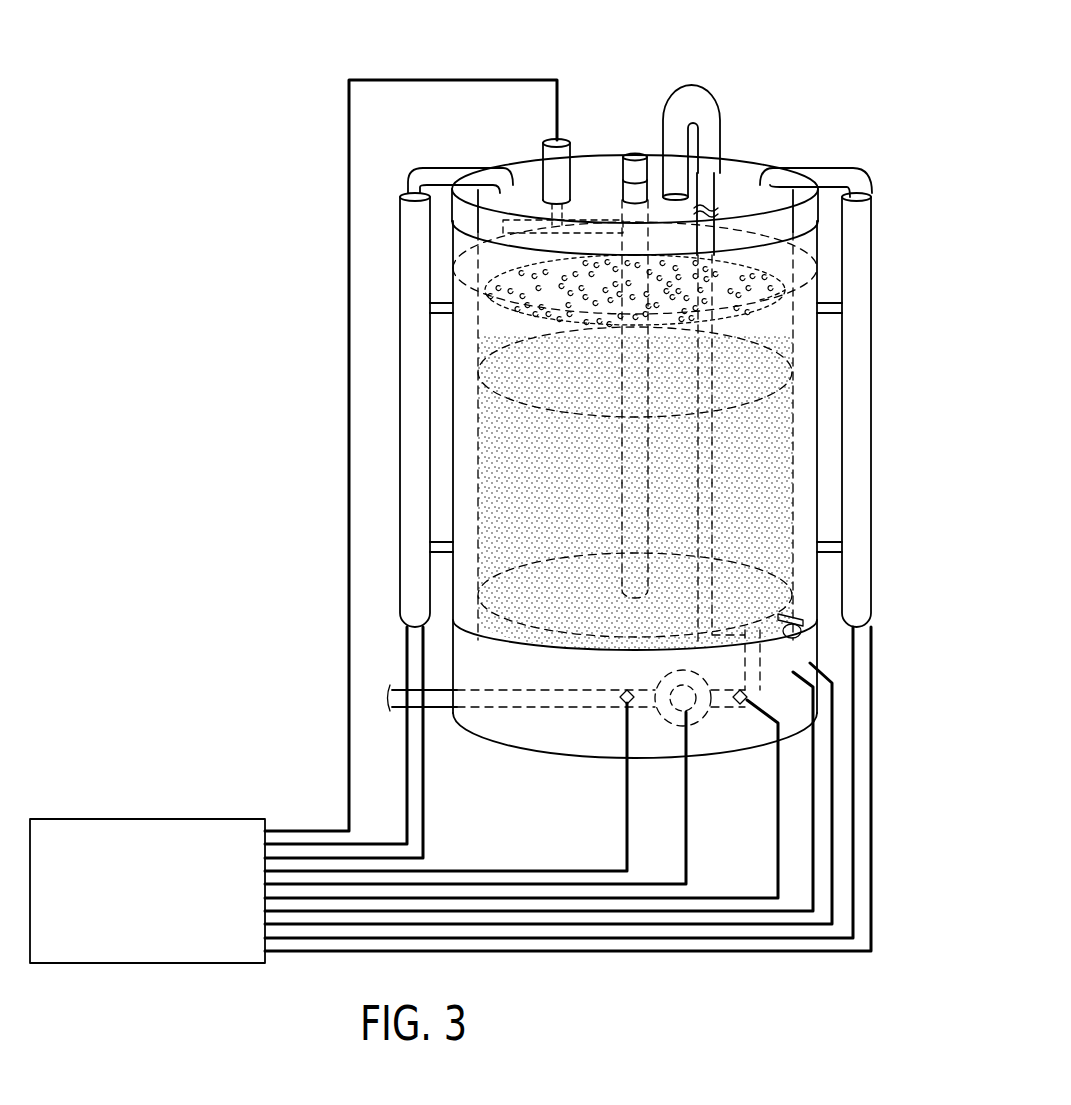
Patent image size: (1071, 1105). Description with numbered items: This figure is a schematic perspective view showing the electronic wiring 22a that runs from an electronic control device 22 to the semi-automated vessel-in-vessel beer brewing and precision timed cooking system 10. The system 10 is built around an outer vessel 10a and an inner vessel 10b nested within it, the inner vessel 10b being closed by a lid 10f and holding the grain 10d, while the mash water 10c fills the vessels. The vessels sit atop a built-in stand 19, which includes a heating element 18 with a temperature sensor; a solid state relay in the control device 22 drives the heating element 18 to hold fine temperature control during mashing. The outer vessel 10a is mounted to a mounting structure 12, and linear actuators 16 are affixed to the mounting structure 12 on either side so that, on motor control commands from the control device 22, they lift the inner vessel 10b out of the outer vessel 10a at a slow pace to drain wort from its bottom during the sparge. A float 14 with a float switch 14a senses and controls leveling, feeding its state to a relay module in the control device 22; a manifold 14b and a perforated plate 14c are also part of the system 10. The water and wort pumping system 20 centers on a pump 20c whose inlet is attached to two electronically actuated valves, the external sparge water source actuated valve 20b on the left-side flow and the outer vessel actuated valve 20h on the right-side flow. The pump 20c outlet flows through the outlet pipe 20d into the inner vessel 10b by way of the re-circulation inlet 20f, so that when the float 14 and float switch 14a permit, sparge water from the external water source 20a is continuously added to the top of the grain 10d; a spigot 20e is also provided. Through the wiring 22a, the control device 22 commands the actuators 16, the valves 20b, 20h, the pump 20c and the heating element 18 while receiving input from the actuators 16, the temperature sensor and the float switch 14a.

The semi-automated vessel-in-vessel beer brewing and precision timed cooking system 10 is at (316, 76).
The outer vessel 10a is at (452, 407).
The inner vessel 10b is at (522, 222).
The mash water 10c is at (530, 330).
The grain 10d is at (772, 495).
The lid 10f is at (530, 176).
The mounting structure 12 is at (443, 303).
The float 14 is at (597, 217).
The float switch 14a is at (487, 317).
The manifold 14b is at (773, 290).
The perforated plate 14c is at (597, 330).
The linear actuators 16 is at (405, 232).
The heating element 18 is at (473, 640).
The built-in stand 19 is at (532, 730).
The water and wort pumping system 20 is at (766, 704).
The external water source 20a is at (430, 700).
The external sparge water source actuated valve 20b is at (613, 695).
The pump 20c is at (710, 716).
The outlet pipe 20d is at (712, 432).
The spigot 20e is at (802, 636).
The re-circulation inlet 20f is at (670, 143).
The outer vessel actuated valve 20h is at (763, 700).
The electronic control device 22 is at (148, 818).
The electronic wiring 22a is at (535, 960).